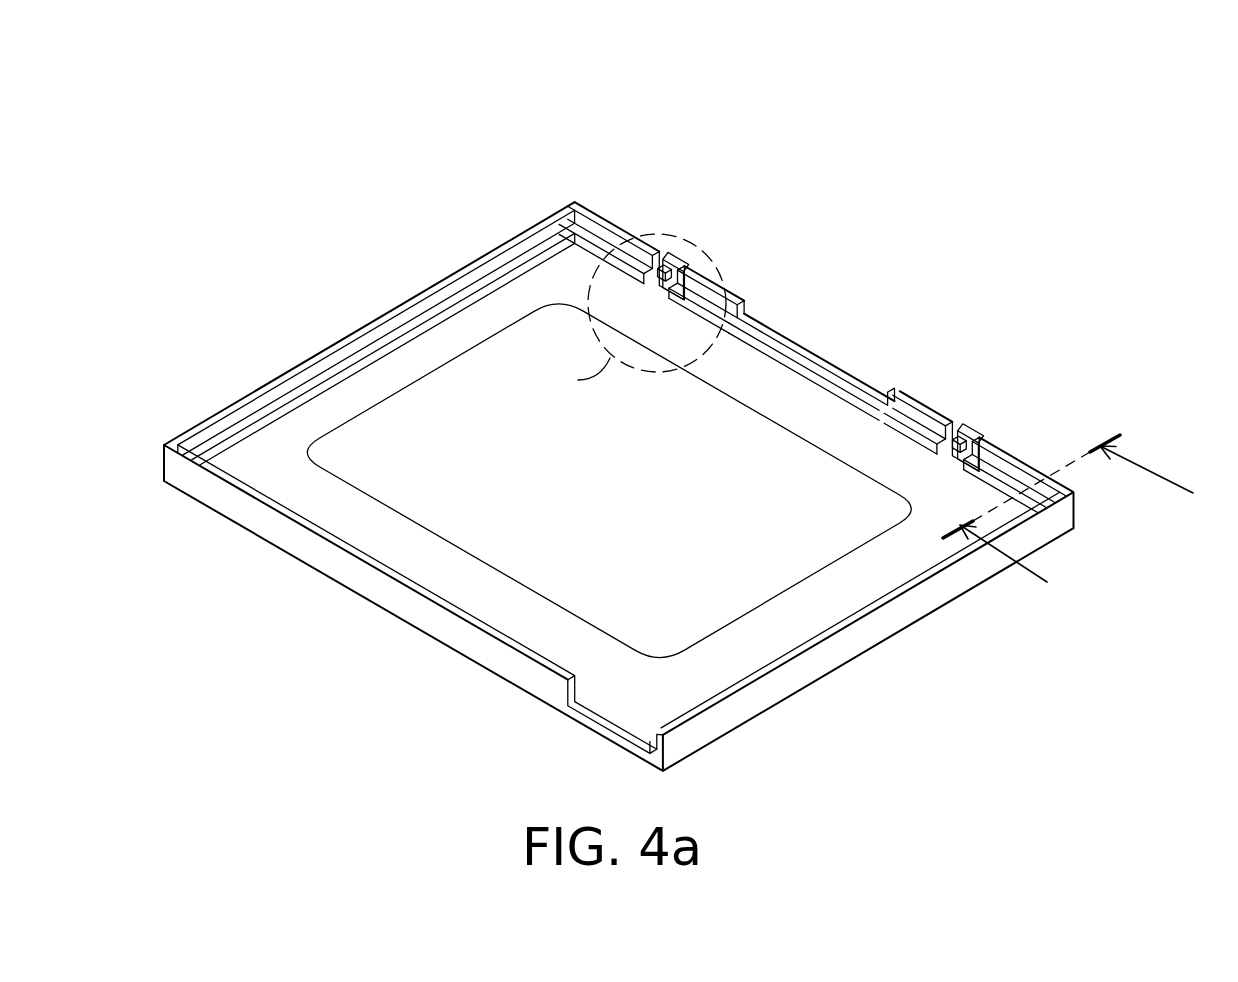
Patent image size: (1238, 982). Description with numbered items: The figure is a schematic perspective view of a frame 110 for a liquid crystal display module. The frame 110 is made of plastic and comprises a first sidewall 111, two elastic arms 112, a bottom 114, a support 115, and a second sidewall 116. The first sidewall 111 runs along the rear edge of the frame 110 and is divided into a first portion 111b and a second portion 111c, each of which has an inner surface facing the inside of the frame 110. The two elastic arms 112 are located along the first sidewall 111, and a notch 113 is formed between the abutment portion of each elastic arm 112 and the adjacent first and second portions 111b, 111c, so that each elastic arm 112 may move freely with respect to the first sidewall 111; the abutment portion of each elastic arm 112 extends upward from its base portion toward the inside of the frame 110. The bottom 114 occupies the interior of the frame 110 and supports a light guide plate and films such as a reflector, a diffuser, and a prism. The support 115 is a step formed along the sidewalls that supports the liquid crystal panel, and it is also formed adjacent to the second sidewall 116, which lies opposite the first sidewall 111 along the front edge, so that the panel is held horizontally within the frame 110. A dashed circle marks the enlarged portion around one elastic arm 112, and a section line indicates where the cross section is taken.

The frame 110 is at (197, 172).
The first sidewall 111 is at (791, 93).
The first portion 111b is at (613, 232).
The second portion 111c is at (739, 292).
The elastic arm 112 is at (669, 266).
The notch 113 is at (682, 262).
The bottom 114 is at (906, 476).
The support 115 is at (819, 378).
The second sidewall 116 is at (421, 618).